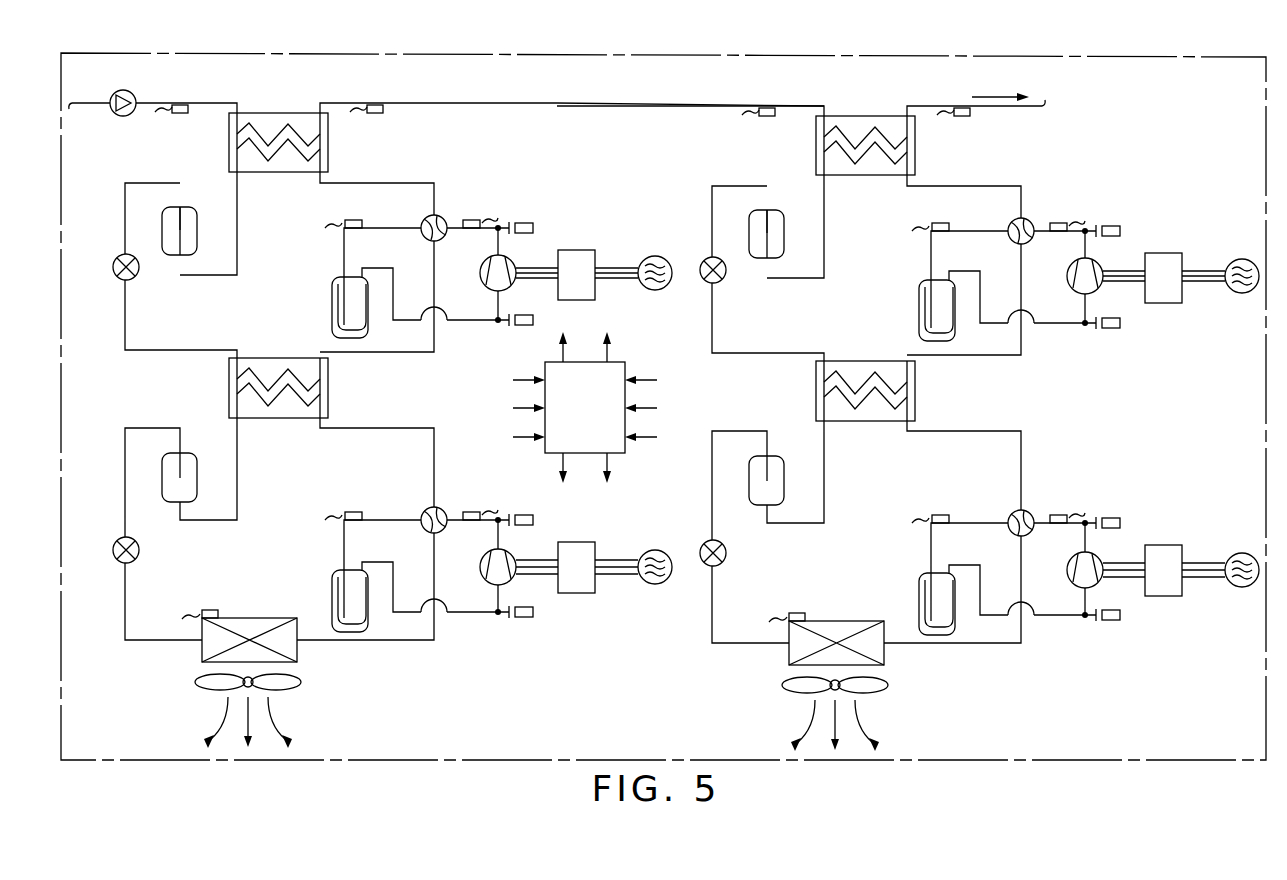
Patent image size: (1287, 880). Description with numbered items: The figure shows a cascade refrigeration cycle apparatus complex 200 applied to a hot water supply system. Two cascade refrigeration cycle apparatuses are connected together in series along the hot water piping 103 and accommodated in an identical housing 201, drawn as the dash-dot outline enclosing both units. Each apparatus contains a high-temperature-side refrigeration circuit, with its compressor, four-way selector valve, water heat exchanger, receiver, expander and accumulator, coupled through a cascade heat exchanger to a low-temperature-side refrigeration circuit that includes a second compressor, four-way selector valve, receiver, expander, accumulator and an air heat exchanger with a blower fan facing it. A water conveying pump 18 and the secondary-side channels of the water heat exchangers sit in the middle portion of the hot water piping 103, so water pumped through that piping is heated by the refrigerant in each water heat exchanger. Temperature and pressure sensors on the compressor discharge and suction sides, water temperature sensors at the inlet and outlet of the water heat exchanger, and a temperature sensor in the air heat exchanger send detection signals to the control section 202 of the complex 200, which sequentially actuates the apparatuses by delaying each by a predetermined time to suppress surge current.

The water conveying pump 18 is at (123, 117).
The hot water piping 103 is at (313, 89).
The cascade refrigeration cycle apparatus complex 200 is at (997, 44).
The housing 201 is at (737, 52).
The control section 202 is at (620, 361).